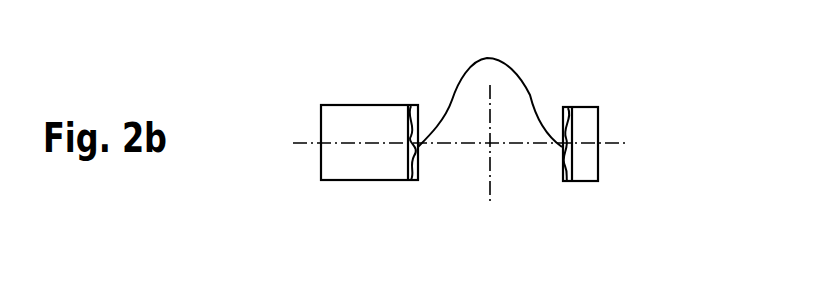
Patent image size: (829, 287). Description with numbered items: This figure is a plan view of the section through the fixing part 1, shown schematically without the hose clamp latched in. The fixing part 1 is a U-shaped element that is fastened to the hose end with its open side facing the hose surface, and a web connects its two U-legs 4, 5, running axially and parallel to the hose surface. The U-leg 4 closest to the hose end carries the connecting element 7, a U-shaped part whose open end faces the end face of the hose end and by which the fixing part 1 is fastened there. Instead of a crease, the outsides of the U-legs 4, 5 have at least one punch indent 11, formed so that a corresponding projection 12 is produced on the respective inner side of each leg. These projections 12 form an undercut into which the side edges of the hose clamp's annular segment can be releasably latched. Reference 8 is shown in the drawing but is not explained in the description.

The fixing part 1 is at (360, 94).
The U-leg 4 is at (411, 108).
The U-leg 5 is at (574, 172).
The connecting element 7 is at (296, 199).
The gap between components 8 is at (527, 156).
The punch indent 11 is at (411, 150).
The projection 12 is at (490, 87).